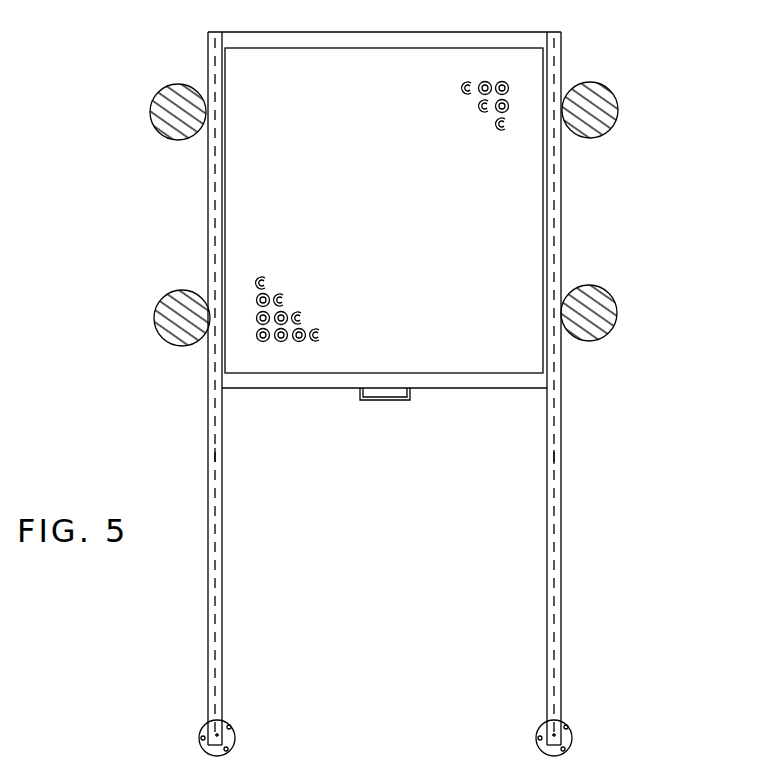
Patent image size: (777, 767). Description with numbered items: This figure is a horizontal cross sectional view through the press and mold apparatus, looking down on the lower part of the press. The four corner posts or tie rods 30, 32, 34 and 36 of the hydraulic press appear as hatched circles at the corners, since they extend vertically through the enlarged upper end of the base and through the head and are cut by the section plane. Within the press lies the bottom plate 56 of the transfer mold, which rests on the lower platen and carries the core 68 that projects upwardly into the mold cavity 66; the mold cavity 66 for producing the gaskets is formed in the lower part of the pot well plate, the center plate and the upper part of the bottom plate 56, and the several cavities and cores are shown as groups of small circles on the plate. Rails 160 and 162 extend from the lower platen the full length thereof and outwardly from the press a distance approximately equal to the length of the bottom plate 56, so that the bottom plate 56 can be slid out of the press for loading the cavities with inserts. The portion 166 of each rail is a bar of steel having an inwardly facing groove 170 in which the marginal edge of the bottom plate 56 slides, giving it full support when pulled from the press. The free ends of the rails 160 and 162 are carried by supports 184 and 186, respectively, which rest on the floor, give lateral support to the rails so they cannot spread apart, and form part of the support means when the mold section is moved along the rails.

The bottom plate 56 is at (432, 55).
The corner post or tie rod 36 is at (180, 86).
The corner post or tie rod 34 is at (612, 98).
The corner post or tie rod 30 is at (178, 336).
The corner post or tie rod 32 is at (600, 333).
The mold cavity 66 is at (480, 94).
The core 68 is at (497, 111).
The rail 160 is at (210, 624).
The rail 162 is at (556, 460).
The rail portion 166 is at (217, 620).
The inwardly facing groove 170 is at (222, 455).
The support 184 is at (235, 736).
The support 186 is at (546, 728).